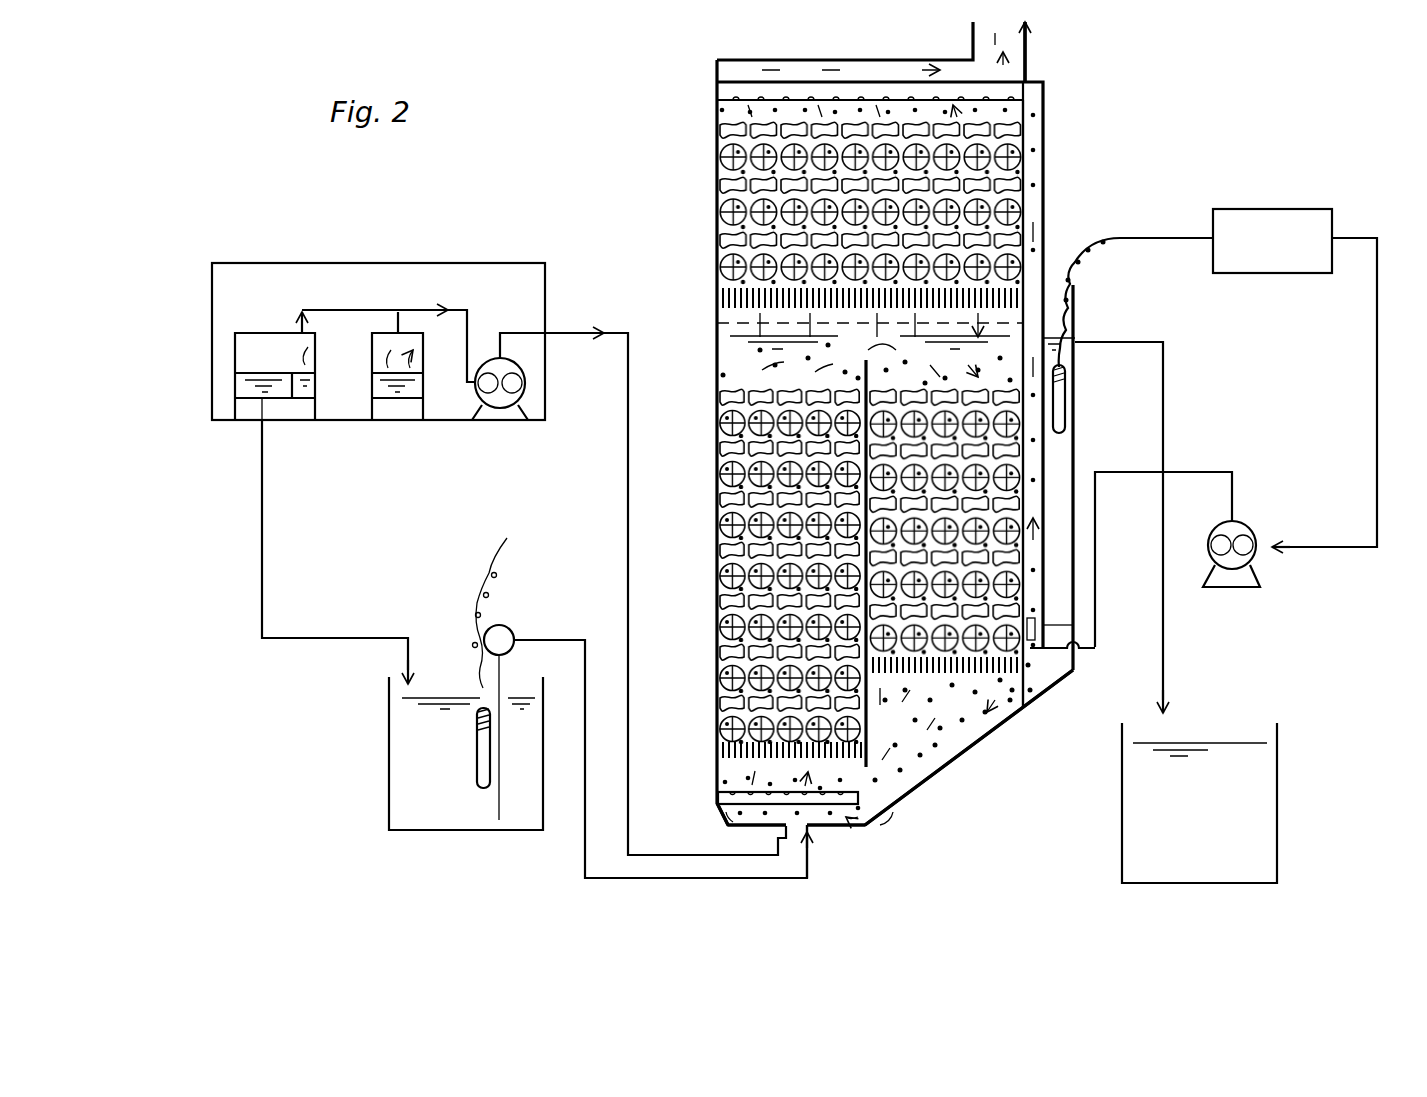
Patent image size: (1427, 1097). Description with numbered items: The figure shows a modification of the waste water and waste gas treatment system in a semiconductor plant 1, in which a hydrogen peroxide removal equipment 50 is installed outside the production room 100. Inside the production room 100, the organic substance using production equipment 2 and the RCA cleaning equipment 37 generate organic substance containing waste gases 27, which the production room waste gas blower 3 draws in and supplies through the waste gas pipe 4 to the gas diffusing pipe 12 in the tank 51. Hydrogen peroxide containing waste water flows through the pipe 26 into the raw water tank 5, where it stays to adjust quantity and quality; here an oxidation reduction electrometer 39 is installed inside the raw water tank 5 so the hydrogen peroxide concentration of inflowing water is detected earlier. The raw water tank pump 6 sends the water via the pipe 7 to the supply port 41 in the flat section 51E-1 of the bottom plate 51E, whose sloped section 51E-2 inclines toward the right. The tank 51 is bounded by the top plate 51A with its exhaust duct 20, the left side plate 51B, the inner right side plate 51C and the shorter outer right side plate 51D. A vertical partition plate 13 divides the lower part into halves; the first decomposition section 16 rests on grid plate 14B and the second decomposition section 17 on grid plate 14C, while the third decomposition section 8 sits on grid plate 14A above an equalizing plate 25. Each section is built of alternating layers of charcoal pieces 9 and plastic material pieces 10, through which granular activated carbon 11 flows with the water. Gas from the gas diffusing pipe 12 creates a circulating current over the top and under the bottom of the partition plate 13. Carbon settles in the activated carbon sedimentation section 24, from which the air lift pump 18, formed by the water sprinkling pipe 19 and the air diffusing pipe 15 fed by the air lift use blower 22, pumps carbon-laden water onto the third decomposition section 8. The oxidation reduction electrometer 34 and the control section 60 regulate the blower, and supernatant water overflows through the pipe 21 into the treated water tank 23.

The semiconductor plant 1 is at (482, 250).
The production room 100 is at (357, 278).
The RCA cleaning equipment 37 is at (258, 333).
The organic substance using production equipment 2 is at (372, 355).
The organic substance containing waste gases 27 is at (310, 363).
The production room waste gas blower 3 is at (508, 360).
The waste gas pipe 4 is at (582, 332).
The pipe 26 is at (348, 637).
The raw water tank 5 is at (389, 715).
The raw water tank pump 6 is at (499, 625).
The oxidation reduction electrometer 39 is at (477, 750).
The pipe 7 is at (585, 637).
The hydrogen peroxide removal equipment 50 is at (708, 71).
The tank 51 is at (710, 108).
The top plate 51A is at (810, 60).
The water sprinkling pipe 19 is at (850, 83).
The exhaust duct 20 is at (1030, 28).
The left side plate 51B is at (718, 165).
The third decomposition section 8 is at (716, 203).
The charcoal pieces 9 is at (718, 125).
The plastic material pieces 10 is at (718, 207).
The right side plate 51C is at (1023, 165).
The air lift pump 18 is at (1045, 235).
The grid plate 14A is at (717, 302).
The equalizing plate 25 is at (717, 325).
The activated carbon 11 is at (722, 375).
The first decomposition section 16 is at (717, 547).
The second decomposition section 17 is at (1045, 457).
The grid plate 14B is at (717, 777).
The grid plate 14C is at (1020, 697).
The gas diffusing pipe 12 is at (727, 812).
The partition plate 13 is at (897, 815).
The flat section 51E-1 is at (837, 828).
The bottom plate 51E is at (880, 837).
The sloped section 51E-2 is at (975, 760).
The waste water supply port 41 is at (815, 828).
The air diffusing pipe 15 is at (1035, 630).
The activated carbon sedimentation section 24 is at (1053, 505).
The oxidation reduction electrometer 34 is at (1067, 390).
The right side plate 51D is at (1075, 297).
The pipe 21 is at (1163, 385).
The air lift use blower 22 is at (1256, 530).
The treated water tank 23 is at (1277, 757).
The control section 60 is at (1292, 209).